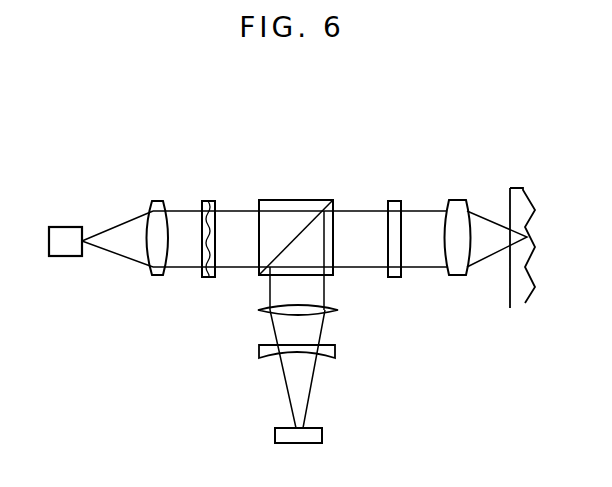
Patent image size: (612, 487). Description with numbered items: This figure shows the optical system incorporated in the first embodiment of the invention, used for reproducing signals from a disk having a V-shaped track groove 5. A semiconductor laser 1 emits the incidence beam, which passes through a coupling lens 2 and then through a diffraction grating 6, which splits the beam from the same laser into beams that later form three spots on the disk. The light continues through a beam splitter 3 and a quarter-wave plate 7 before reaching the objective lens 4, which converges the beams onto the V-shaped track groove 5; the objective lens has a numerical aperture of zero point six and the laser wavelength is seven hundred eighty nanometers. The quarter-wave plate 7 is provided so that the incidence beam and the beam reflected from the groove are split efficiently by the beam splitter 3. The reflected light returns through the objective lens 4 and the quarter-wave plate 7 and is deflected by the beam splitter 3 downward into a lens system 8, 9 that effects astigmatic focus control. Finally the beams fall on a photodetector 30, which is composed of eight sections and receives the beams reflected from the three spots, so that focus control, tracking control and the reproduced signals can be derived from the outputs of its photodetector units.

The semiconductor laser 1 is at (66, 227).
The coupling lens 2 is at (158, 200).
The diffraction grating 6 is at (213, 201).
The beam splitter 3 is at (305, 200).
The quarter-wave plate 7 is at (395, 201).
The objective lens 4 is at (457, 200).
The V-shaped track groove 5 is at (517, 188).
The lens system 8 is at (338, 310).
The lens system 9 is at (335, 350).
The photodetector 30 is at (322, 435).